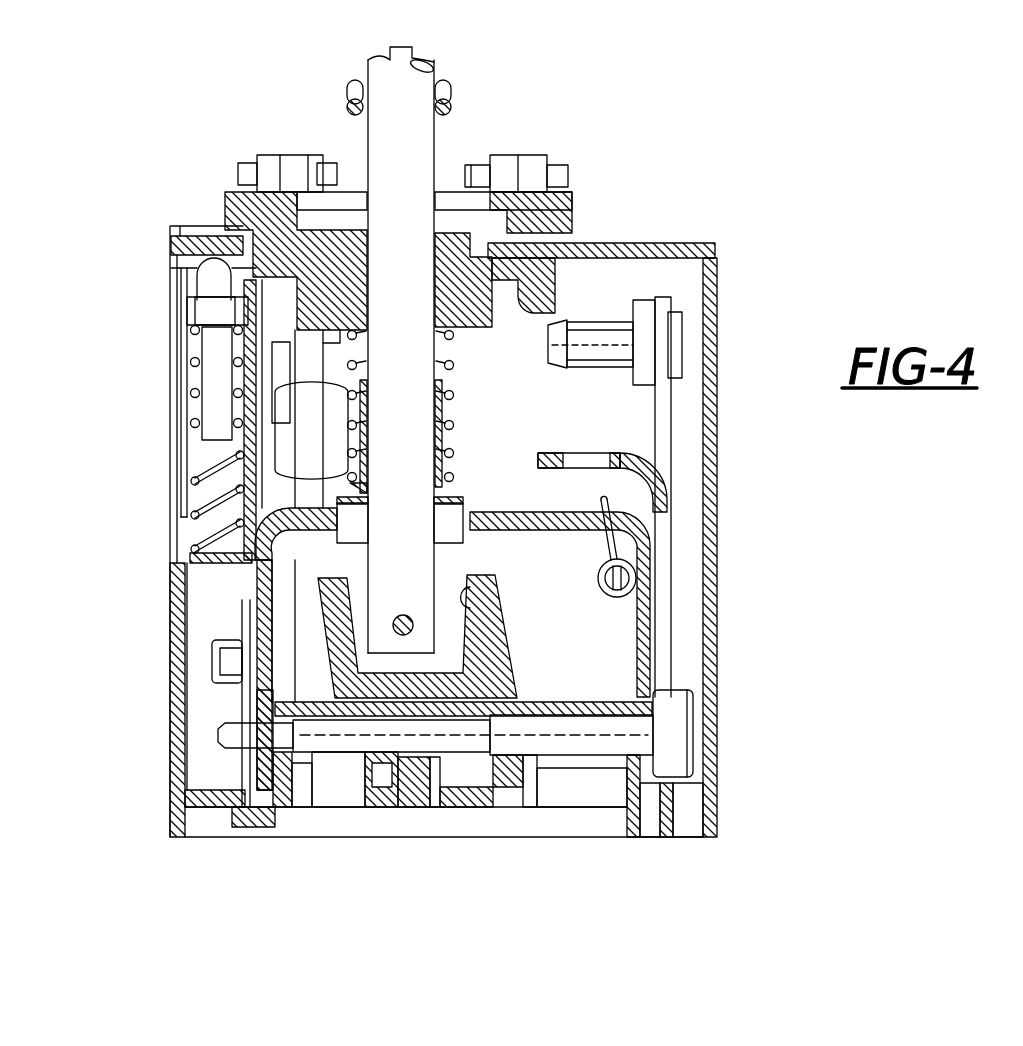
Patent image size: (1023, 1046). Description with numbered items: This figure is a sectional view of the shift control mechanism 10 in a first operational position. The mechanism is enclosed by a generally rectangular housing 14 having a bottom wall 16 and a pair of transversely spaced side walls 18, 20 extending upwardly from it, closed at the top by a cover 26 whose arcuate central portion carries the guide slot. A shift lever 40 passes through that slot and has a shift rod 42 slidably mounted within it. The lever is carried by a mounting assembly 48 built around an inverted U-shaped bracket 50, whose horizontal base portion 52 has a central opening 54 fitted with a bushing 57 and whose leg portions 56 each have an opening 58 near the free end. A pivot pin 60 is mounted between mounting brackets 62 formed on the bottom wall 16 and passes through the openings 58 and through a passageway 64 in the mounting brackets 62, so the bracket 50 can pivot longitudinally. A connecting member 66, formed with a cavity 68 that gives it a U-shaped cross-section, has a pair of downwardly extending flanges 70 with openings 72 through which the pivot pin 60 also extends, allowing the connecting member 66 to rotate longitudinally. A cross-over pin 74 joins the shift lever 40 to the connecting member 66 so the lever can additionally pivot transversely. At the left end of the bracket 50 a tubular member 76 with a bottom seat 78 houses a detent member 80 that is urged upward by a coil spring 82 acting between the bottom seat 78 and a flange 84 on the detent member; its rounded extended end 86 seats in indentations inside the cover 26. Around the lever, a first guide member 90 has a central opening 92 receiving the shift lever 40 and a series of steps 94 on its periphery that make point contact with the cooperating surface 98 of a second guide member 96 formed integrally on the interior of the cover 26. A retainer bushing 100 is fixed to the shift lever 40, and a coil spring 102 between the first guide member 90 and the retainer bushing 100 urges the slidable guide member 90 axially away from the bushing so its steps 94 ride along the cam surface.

The shift control mechanism 10 is at (766, 212).
The housing 14 is at (728, 298).
The bottom wall 16 is at (660, 838).
The side wall 18 is at (172, 655).
The side wall 20 is at (718, 565).
The cover 26 is at (227, 203).
The shift lever 40 is at (430, 147).
The shift rod 42 is at (430, 62).
The mounting assembly 48 is at (655, 522).
The bracket 50 is at (655, 515).
The base portion 52 is at (527, 522).
The central opening 54 is at (468, 540).
The leg portions 56 is at (640, 630).
The bushing 57 is at (465, 527).
The opening 58 is at (656, 733).
The pivot pin 60 is at (325, 750).
The mounting brackets 62 is at (308, 710).
The passageway 64 is at (372, 753).
The connecting member 66 is at (495, 657).
The cavity 68 is at (460, 603).
The flanges 70 is at (418, 767).
The openings 72 is at (497, 722).
The cross-over pin 74 is at (398, 618).
The tubular member 76 is at (233, 493).
The bottom seat 78 is at (183, 560).
The detent member 80 is at (210, 390).
The coil spring 82 is at (197, 367).
The flange 84 is at (197, 313).
The extended end 86 is at (213, 272).
The first guide member 90 is at (480, 313).
The central opening 92 is at (460, 325).
The steps 94 is at (480, 257).
The second guide member 96 is at (525, 300).
The cooperating surface 98 is at (557, 313).
The retainer bushing 100 is at (447, 435).
The coil spring 102 is at (447, 478).